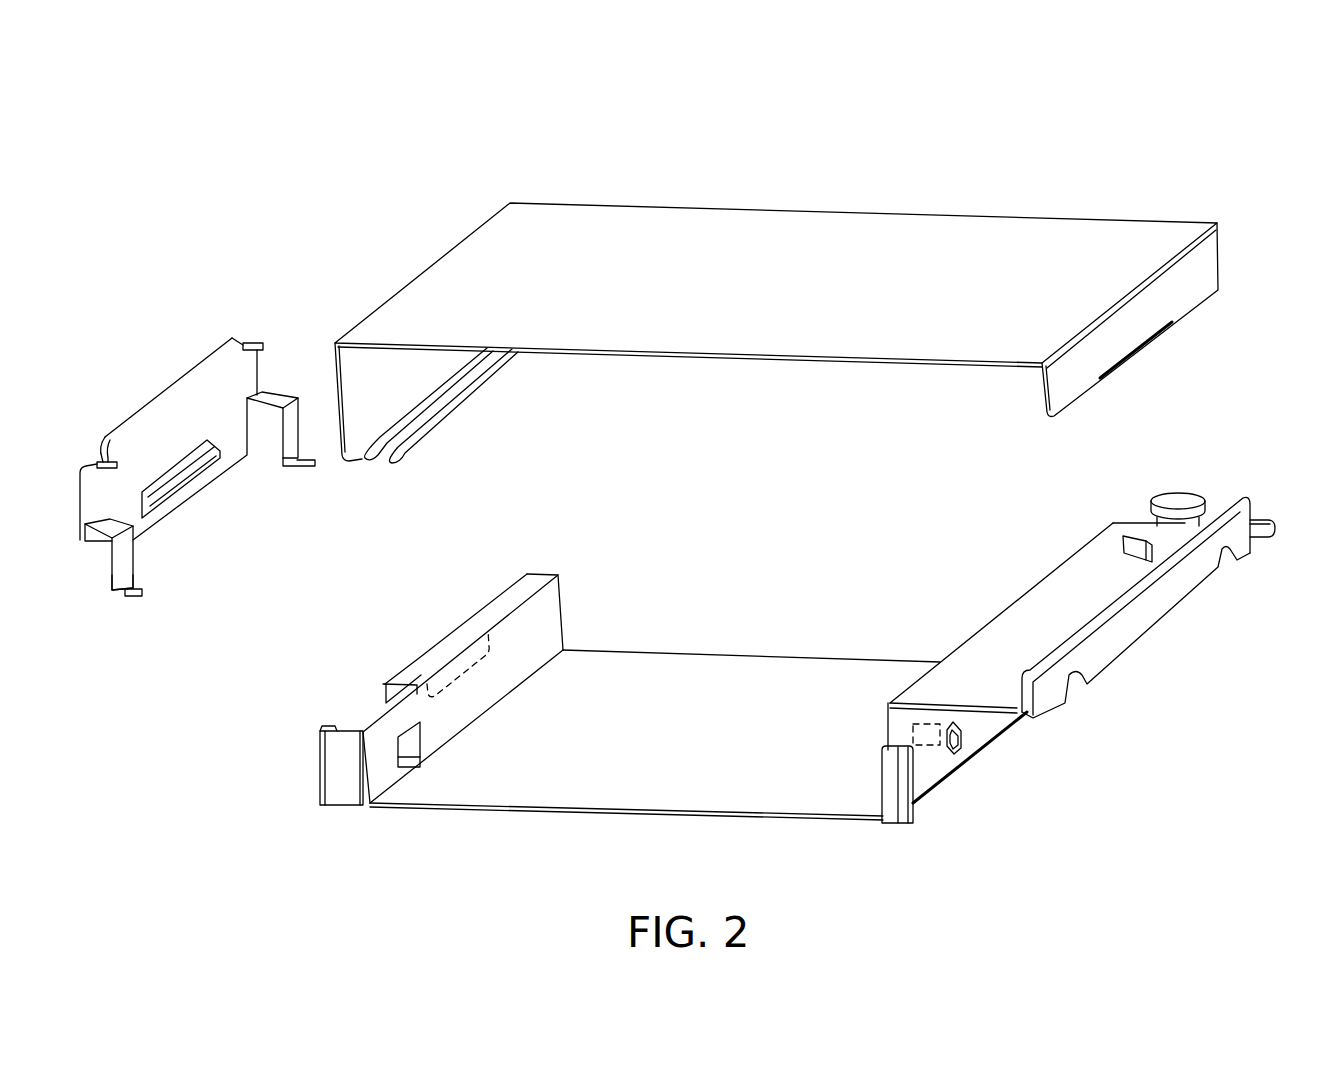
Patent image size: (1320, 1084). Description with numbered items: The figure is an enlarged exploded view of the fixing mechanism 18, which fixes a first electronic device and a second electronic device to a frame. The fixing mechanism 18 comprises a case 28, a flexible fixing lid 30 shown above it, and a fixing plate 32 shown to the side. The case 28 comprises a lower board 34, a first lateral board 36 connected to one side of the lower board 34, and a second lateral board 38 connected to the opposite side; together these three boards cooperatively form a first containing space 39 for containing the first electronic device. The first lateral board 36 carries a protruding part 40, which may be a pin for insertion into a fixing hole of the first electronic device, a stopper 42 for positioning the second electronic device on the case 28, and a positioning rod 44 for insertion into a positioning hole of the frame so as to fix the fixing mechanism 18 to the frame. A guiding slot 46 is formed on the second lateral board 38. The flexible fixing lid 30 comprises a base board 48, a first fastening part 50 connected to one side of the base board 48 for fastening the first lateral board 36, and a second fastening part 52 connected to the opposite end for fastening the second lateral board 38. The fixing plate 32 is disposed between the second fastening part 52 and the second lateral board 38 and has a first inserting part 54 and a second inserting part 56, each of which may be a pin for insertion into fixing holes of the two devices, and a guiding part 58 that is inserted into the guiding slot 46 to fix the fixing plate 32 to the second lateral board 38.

The fixing mechanism 18 is at (1143, 172).
The case 28 is at (637, 568).
The flexible fixing lid 30 is at (797, 434).
The fixing plate 32 is at (188, 397).
The lower board 34 is at (729, 680).
The first lateral board 36 is at (1005, 632).
The second lateral board 38 is at (537, 632).
The first containing space 39 is at (542, 772).
The protruding part 40 is at (946, 752).
The stopper 42 is at (1140, 545).
The positioning rod 44 is at (1178, 500).
The guiding slot 46 is at (433, 632).
The base board 48 is at (712, 333).
The first fastening part 50 is at (1058, 380).
The second fastening part 52 is at (397, 375).
The first inserting part 54 is at (128, 600).
The second inserting part 56 is at (112, 437).
The guiding part 58 is at (190, 473).